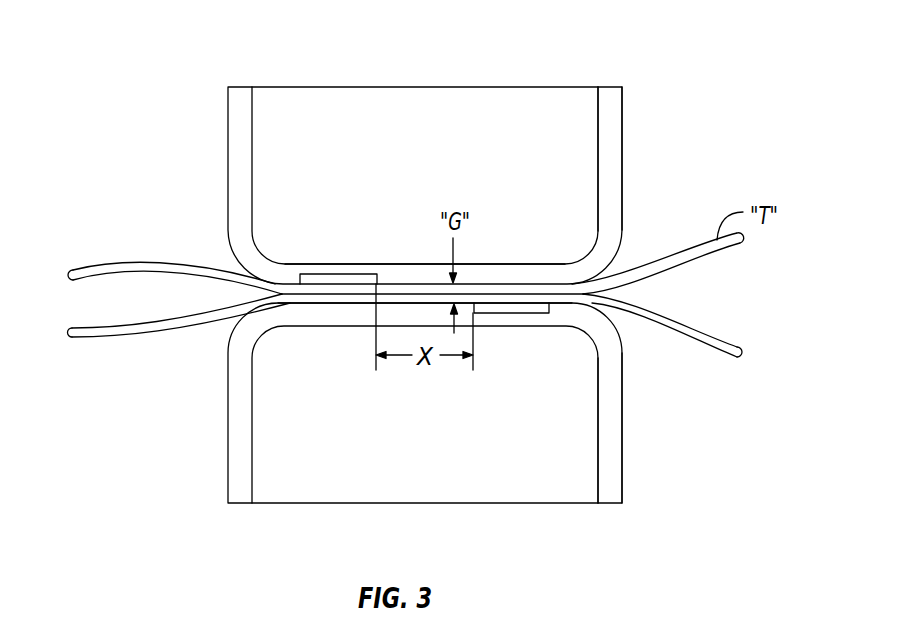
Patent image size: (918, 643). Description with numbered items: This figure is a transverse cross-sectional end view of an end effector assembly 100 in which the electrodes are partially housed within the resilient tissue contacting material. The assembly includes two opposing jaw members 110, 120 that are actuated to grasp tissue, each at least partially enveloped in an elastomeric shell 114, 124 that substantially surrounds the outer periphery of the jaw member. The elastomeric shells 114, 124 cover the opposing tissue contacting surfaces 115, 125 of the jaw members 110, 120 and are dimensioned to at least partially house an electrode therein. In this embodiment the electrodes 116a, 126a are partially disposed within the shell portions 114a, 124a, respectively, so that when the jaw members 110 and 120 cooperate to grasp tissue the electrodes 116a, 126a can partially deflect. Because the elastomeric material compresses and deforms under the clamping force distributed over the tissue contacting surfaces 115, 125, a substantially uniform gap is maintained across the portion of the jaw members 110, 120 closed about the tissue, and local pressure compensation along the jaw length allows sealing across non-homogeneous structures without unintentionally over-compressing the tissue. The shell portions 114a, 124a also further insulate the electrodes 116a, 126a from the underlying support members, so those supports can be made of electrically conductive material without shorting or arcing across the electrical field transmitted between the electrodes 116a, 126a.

The end effector assembly 100 is at (178, 73).
The jaw member 110 is at (448, 154).
The elastomeric shell 114 is at (613, 133).
The shell 114a is at (360, 267).
The tissue contacting surface 115 is at (482, 262).
The electrode 116a is at (335, 280).
The jaw member 120 is at (446, 472).
The elastomeric shell 124 is at (614, 425).
The shell 124a is at (518, 320).
The tissue contacting surface 125 is at (315, 328).
The electrode 126a is at (498, 310).